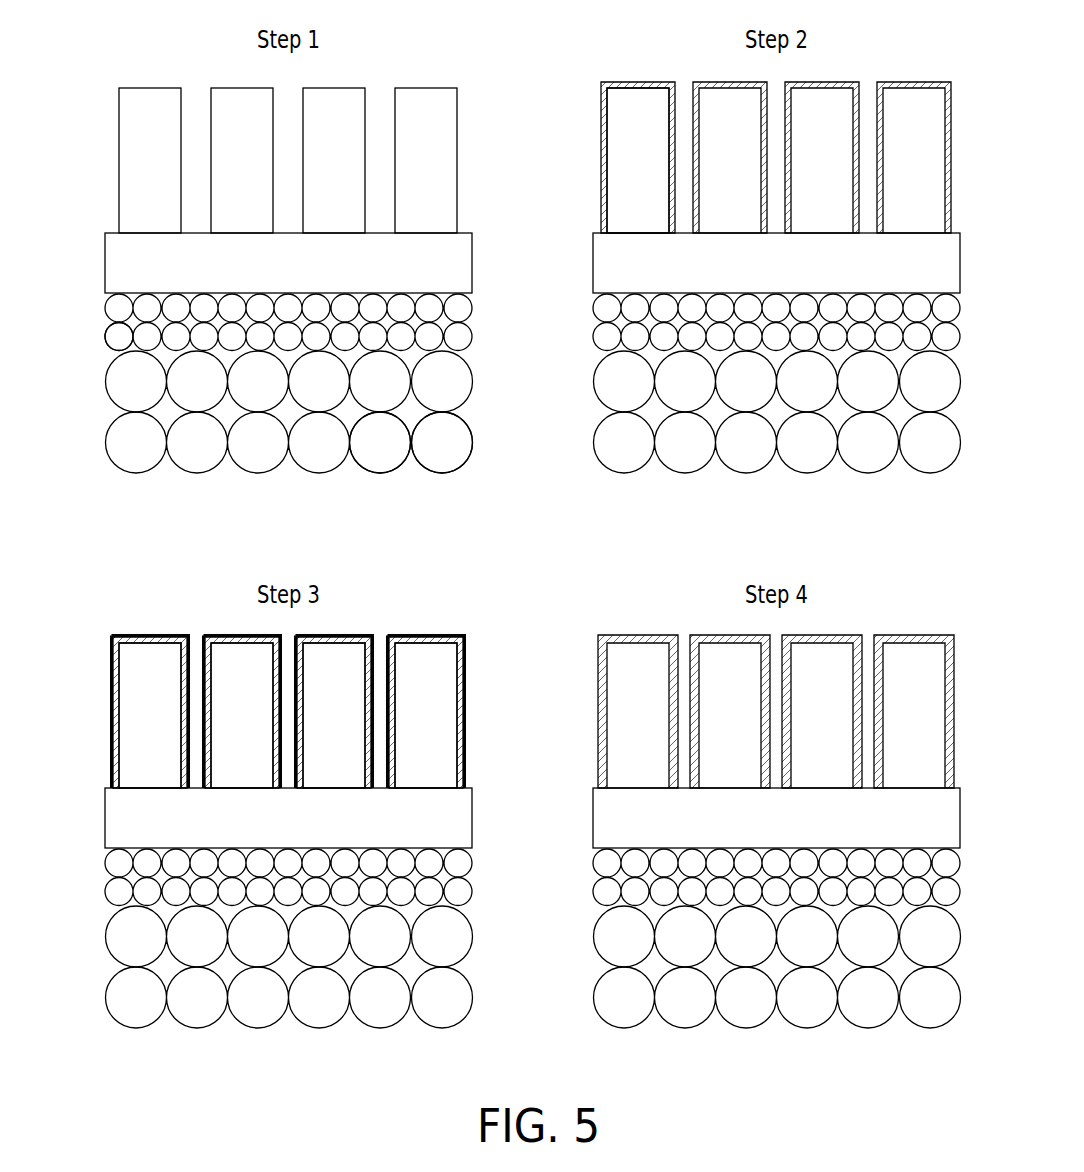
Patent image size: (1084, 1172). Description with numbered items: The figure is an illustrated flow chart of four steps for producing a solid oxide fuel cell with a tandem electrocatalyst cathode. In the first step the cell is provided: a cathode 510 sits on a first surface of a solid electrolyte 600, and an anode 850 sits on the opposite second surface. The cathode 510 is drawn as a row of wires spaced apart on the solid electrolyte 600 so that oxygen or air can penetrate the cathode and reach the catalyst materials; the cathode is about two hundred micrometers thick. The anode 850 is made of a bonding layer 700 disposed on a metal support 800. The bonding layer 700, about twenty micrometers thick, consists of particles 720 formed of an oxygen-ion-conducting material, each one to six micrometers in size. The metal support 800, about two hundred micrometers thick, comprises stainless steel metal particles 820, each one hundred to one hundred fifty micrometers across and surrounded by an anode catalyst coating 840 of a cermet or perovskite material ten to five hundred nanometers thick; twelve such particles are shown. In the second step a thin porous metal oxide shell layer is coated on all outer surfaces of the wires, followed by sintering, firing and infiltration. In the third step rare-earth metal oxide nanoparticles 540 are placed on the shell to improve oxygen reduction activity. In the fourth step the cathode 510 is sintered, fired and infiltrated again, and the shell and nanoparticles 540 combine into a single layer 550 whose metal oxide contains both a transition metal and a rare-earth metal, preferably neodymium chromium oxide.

The cathode 510 is at (480, 86).
The nanoparticles 540 is at (466, 690).
The layer 550 is at (649, 640).
The solid electrolyte 600 is at (450, 267).
The bonding layer 700 is at (480, 296).
The particles 720 is at (118, 338).
The metal support 800 is at (480, 352).
The metal particles 820 is at (442, 450).
The anode catalyst coating 840 is at (422, 473).
The anode 850 is at (522, 356).